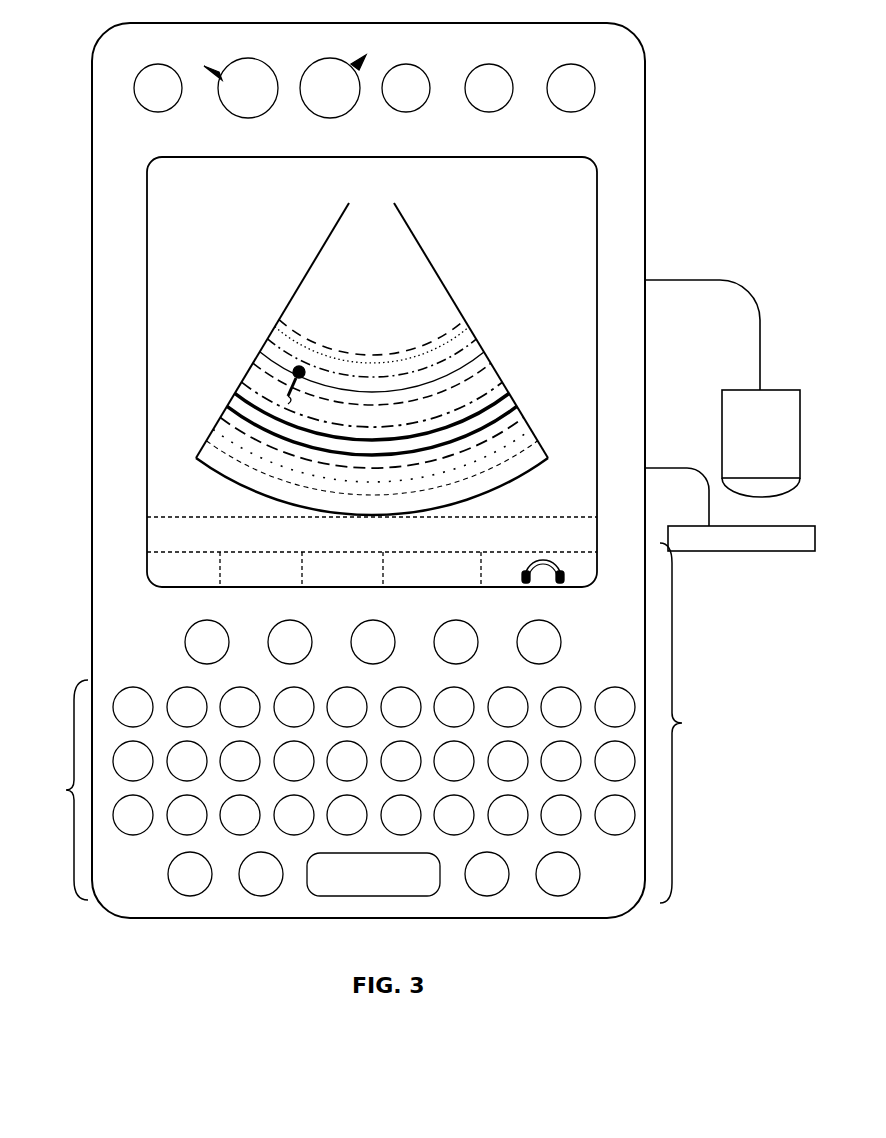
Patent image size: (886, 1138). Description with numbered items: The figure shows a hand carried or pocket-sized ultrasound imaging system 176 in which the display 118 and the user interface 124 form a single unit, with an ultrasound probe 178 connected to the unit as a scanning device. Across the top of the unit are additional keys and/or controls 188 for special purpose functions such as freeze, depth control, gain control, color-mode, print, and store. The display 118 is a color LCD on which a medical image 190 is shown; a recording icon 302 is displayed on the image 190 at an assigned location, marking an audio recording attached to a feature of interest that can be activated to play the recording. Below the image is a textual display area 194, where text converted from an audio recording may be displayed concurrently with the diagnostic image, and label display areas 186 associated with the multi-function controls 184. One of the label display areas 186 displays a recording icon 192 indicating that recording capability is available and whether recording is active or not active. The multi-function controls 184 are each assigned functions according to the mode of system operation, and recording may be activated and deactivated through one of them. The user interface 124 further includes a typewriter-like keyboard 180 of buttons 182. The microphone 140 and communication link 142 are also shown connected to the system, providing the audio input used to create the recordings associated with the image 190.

The pocket-sized ultrasound imaging system 176 is at (106, 29).
The additional keys and/or controls 188 is at (165, 65).
The display 118 is at (597, 203).
The medical image 190 is at (277, 326).
The recording icon 302 is at (293, 368).
The textual display area 194 is at (181, 514).
The label display areas 186 is at (177, 547).
The recording icon 192 is at (561, 566).
The multi-function controls 184 is at (208, 620).
The buttons 182 is at (249, 742).
The keyboard 180 is at (332, 766).
The user interface 124 is at (695, 723).
The ultrasound probe 178 is at (727, 390).
The communication link 142 is at (660, 468).
The microphone 140 is at (740, 551).